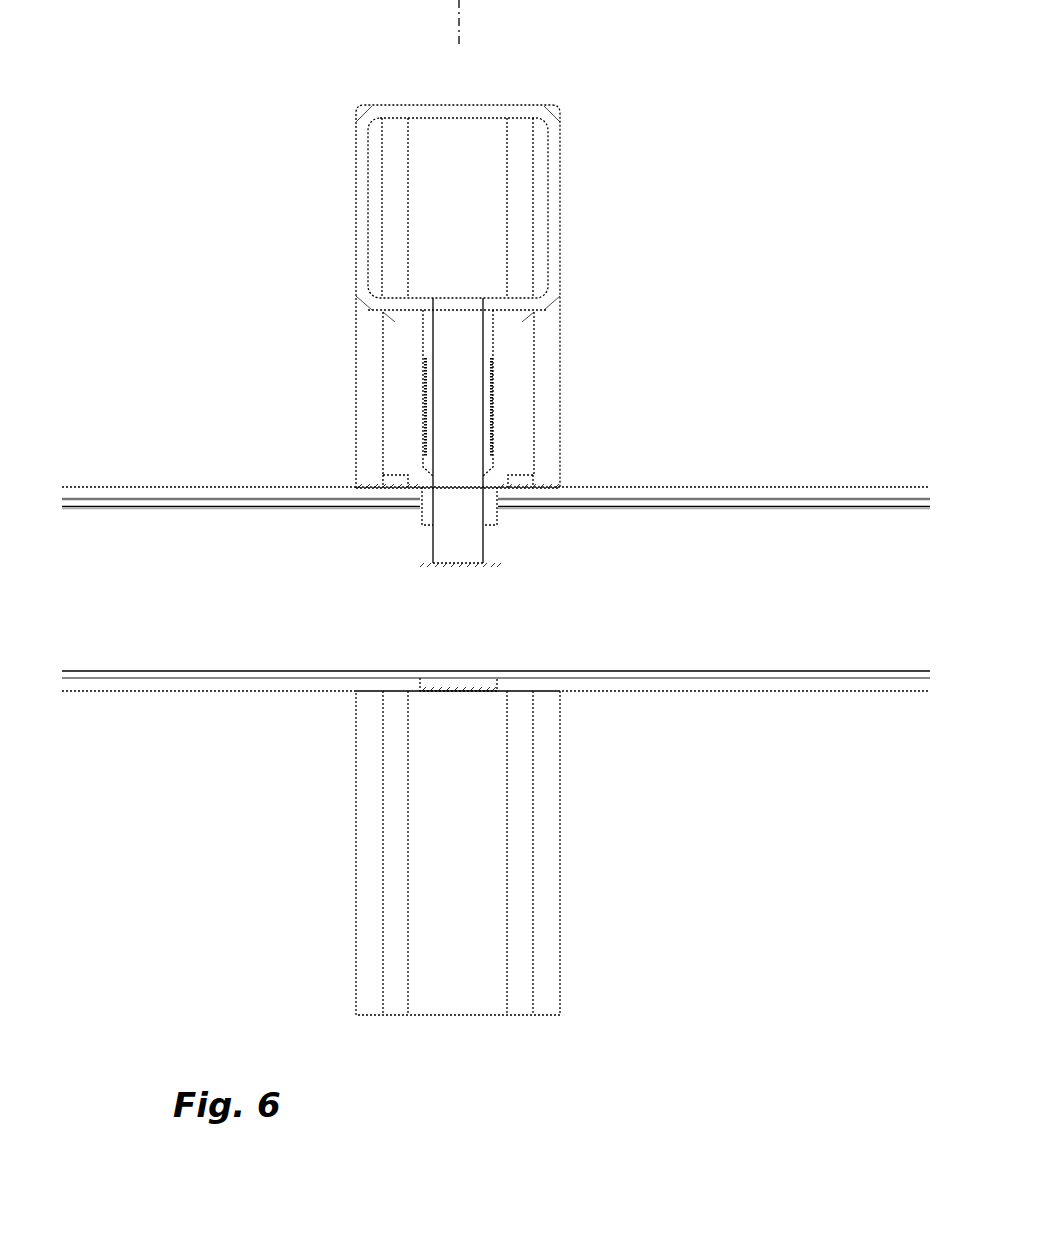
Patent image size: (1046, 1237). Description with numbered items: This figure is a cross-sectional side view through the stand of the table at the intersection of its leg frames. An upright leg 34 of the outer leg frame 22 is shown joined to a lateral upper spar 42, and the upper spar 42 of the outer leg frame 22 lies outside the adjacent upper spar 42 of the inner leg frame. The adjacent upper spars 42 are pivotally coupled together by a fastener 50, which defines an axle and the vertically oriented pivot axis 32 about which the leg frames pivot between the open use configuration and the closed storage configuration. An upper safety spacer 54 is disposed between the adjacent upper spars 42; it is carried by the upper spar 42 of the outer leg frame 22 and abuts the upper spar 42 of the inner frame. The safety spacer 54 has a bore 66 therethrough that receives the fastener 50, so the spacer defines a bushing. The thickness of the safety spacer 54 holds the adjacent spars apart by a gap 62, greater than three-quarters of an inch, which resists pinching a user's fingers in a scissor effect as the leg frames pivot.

The outer leg frame 22 is at (552, 947).
The pivot axis 32 is at (459, 15).
The upright leg 34 is at (370, 929).
The upper spar 42 is at (555, 171).
The fastener 50 is at (462, 380).
The upper safety spacer 54 is at (552, 423).
The gap 62 is at (356, 309).
The bore 66 is at (425, 358).